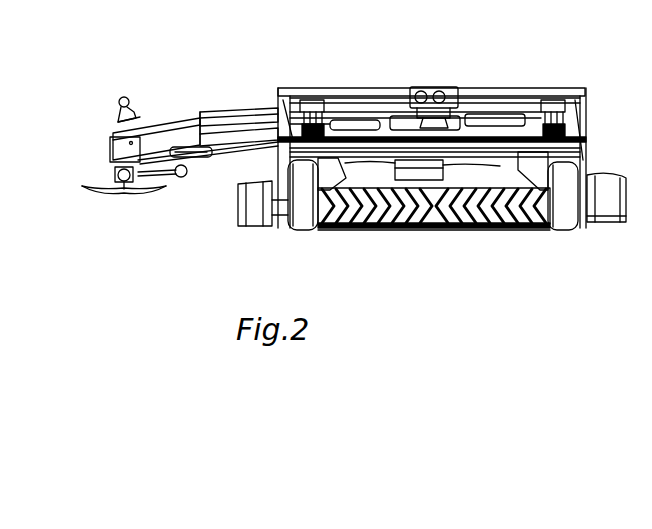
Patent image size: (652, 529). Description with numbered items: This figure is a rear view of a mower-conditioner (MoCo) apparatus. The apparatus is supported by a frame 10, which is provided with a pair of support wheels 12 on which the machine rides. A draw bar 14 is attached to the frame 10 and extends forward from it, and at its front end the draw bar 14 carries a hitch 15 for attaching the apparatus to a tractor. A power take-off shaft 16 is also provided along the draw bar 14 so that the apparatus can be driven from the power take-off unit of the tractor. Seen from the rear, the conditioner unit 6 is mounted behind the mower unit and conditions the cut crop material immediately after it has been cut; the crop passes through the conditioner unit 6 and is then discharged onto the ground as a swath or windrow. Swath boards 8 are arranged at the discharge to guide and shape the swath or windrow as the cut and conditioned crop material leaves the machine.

The conditioner unit 6 is at (406, 228).
The swath boards 8 is at (536, 180).
The frame 10 is at (363, 94).
The support wheels 12 is at (299, 224).
The draw bar 14 is at (165, 120).
The hitch 15 is at (101, 132).
The power take-off shaft 16 is at (227, 147).